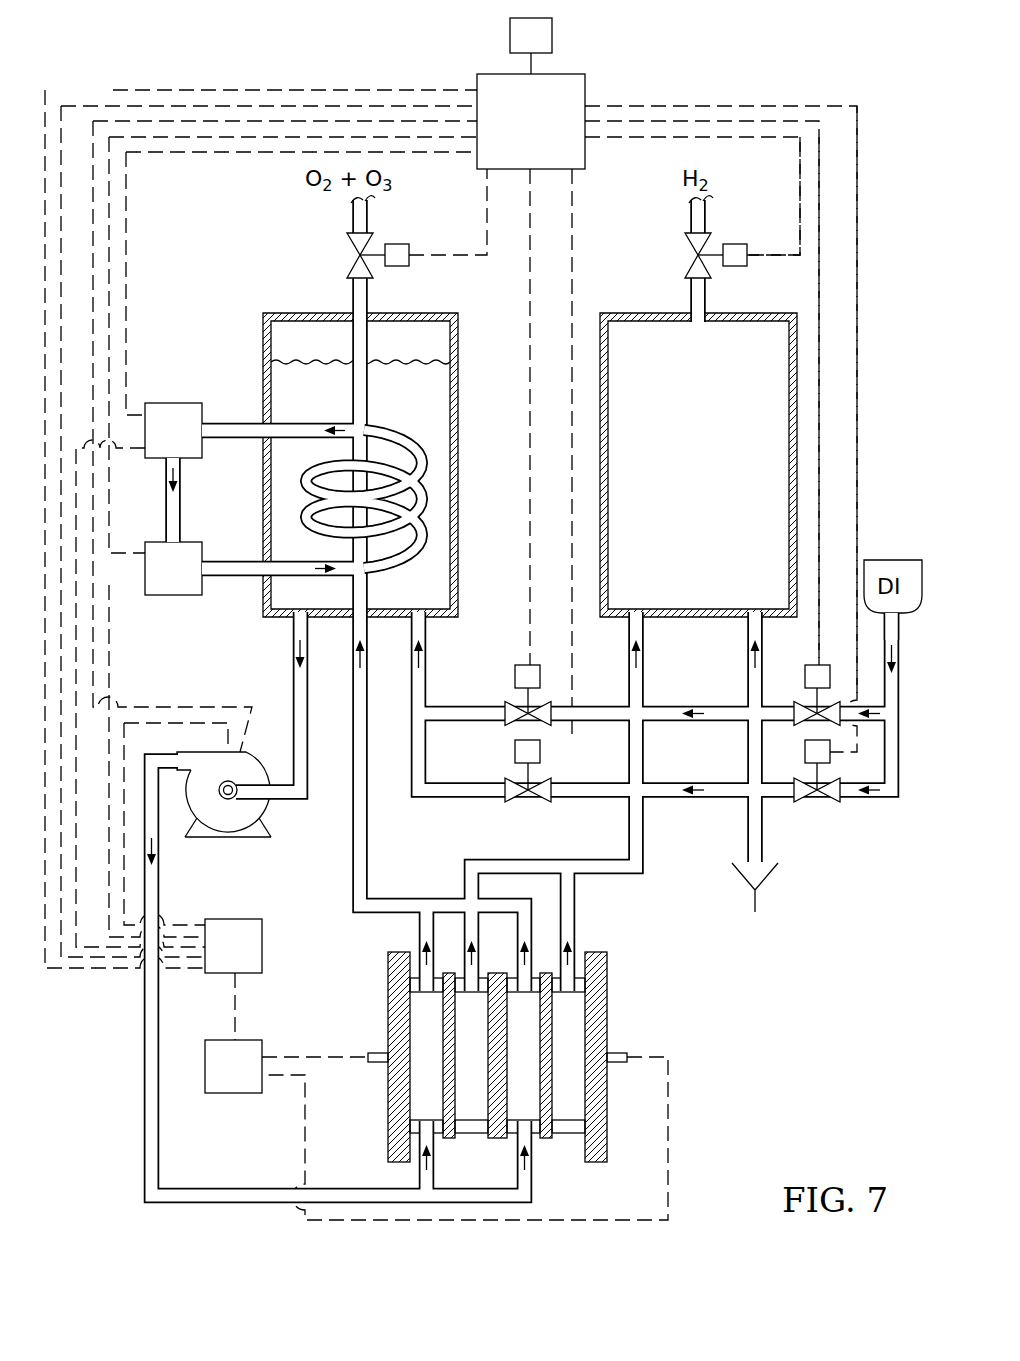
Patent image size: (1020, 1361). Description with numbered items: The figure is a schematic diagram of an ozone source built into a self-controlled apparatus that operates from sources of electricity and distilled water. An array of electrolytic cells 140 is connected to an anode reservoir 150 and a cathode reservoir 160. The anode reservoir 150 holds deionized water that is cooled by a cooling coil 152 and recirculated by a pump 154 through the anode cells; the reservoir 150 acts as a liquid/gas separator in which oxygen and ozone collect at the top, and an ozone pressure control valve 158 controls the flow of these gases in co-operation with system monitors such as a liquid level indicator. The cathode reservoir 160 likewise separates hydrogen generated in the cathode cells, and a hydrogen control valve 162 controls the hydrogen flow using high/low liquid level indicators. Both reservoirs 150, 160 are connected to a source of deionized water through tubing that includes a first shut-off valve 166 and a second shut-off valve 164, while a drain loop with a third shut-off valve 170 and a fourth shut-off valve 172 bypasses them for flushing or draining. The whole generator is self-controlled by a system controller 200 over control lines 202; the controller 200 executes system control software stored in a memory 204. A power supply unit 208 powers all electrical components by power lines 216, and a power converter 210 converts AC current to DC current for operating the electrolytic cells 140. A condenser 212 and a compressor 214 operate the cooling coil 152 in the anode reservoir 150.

The array of electrolytic cells 140 is at (650, 962).
The anode reservoir 150 is at (262, 340).
The cooling coil 152 is at (305, 489).
The pump 154 is at (270, 810).
The ozone pressure control valve 158 is at (348, 263).
The cathode reservoir 160 is at (740, 313).
The hydrogen control valve 162 is at (686, 263).
The second shut-off valve 164 is at (512, 705).
The first shut-off valve 166 is at (797, 722).
The third shut-off valve 170 is at (512, 782).
The fourth shut-off valve 172 is at (797, 782).
The system controller 200 is at (511, 136).
The control lines 202 is at (430, 264).
The memory 204 is at (553, 43).
The power supply unit 208 is at (214, 961).
The power converter 210 is at (214, 1082).
The condenser 212 is at (154, 446).
The compressor 214 is at (154, 584).
The power lines 216 is at (235, 1008).